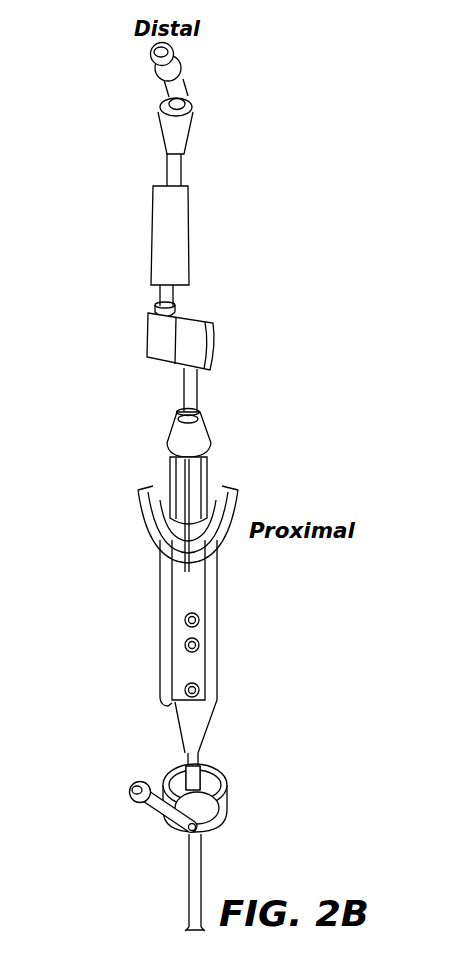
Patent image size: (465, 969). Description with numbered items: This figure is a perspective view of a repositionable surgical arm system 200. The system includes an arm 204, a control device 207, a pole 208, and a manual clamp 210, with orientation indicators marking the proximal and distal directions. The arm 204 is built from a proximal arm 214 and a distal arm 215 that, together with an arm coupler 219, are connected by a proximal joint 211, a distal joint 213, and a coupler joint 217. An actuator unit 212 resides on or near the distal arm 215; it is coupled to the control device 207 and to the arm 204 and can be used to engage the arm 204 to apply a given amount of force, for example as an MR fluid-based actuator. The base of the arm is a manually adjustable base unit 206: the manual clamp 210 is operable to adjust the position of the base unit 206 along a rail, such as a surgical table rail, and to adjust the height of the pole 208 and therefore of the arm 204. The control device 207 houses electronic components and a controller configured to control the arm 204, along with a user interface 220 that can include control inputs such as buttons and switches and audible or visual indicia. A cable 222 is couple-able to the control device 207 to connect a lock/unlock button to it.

The surgical arm system 200 is at (305, 201).
The arm 204 is at (86, 254).
The base unit 206 is at (250, 792).
The control device 207 is at (247, 652).
The pole 208 is at (196, 862).
The manual clamp 210 is at (136, 798).
The proximal joint 211 is at (242, 479).
The actuator unit 212 is at (176, 477).
The distal joint 213 is at (229, 312).
The proximal arm 214 is at (190, 401).
The distal arm 215 is at (172, 182).
The coupler joint 217 is at (235, 73).
The arm coupler 219 is at (148, 52).
The user interface 220 is at (185, 598).
The cable 222 is at (190, 240).